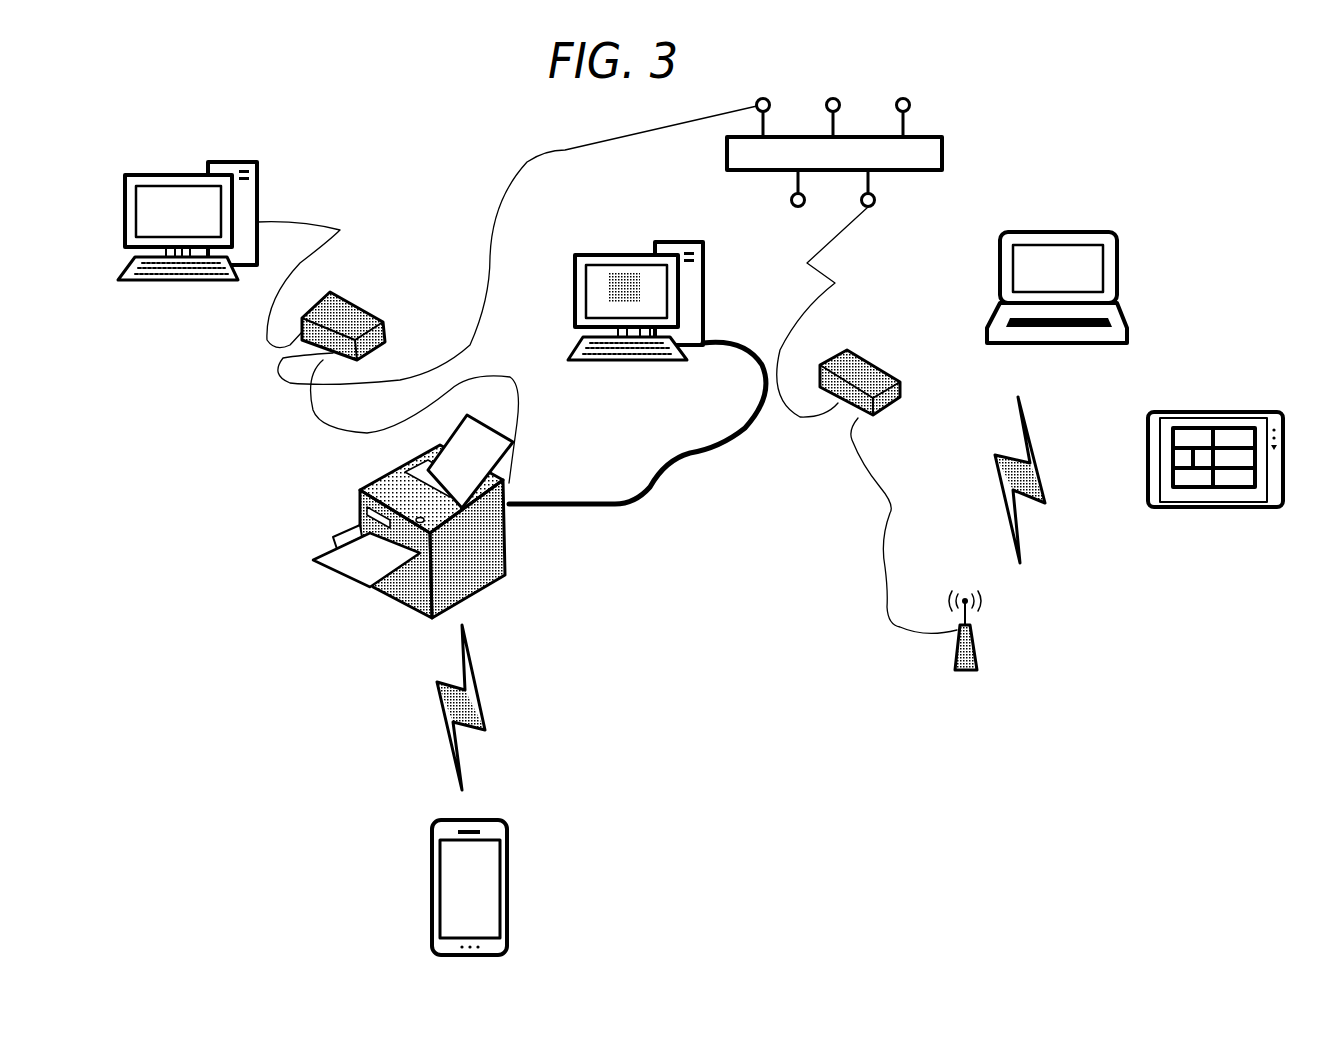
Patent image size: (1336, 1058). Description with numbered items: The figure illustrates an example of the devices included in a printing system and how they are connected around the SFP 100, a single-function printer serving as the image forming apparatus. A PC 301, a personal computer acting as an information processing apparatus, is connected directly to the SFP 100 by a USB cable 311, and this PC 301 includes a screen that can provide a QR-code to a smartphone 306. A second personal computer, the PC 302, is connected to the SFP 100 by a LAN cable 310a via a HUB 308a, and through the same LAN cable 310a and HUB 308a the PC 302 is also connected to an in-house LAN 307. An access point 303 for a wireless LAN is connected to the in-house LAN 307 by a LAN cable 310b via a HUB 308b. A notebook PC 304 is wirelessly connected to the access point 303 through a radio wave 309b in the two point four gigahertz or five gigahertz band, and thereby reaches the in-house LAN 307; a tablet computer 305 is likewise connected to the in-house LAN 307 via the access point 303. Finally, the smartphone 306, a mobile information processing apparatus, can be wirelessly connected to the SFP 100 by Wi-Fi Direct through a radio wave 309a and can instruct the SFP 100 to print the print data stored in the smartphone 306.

The SFP 100 is at (360, 496).
The PC 301 is at (572, 283).
The PC 302 is at (143, 173).
The access point 303 is at (963, 672).
The notebook PC 304 is at (1052, 232).
The tablet computer 305 is at (1190, 410).
The smartphone 306 is at (507, 863).
The in-house LAN 307 is at (922, 135).
The HUB 308a is at (345, 300).
The HUB 308b is at (865, 358).
The radio wave 309a is at (462, 753).
The radio wave 309b is at (1020, 543).
The LAN cable 310a is at (300, 225).
The LAN cable 310b is at (883, 593).
The USB cable 311 is at (640, 503).